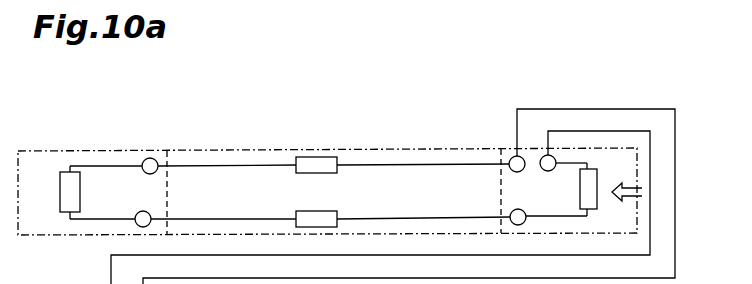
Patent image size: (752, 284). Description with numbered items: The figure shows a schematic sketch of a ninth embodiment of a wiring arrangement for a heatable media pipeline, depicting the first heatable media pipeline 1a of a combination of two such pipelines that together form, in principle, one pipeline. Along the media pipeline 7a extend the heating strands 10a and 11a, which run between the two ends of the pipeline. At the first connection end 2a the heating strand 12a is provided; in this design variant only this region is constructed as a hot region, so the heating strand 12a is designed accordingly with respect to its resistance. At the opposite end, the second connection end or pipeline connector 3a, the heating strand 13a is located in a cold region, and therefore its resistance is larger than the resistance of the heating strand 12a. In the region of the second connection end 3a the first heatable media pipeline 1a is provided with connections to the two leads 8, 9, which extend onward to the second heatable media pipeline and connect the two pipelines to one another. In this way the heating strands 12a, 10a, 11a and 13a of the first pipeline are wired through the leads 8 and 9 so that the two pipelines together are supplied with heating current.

The first heatable media pipeline 1a is at (460, 132).
The first connection end 2a is at (72, 150).
The heating strand 12a is at (115, 165).
The heating strand 11a is at (217, 165).
The media pipeline 7a is at (277, 150).
The heating strand 10a is at (392, 219).
The lead 8 is at (540, 109).
The lead 9 is at (575, 131).
The heating strand 13a is at (587, 163).
The second connection end or pipeline connector 3a is at (630, 148).